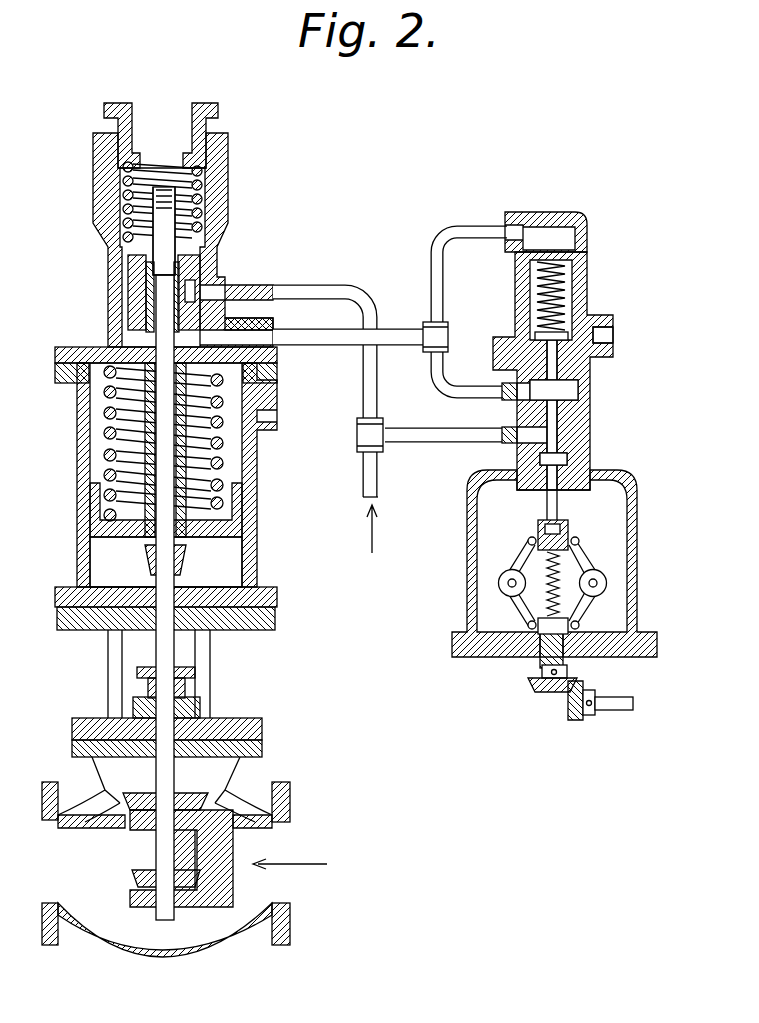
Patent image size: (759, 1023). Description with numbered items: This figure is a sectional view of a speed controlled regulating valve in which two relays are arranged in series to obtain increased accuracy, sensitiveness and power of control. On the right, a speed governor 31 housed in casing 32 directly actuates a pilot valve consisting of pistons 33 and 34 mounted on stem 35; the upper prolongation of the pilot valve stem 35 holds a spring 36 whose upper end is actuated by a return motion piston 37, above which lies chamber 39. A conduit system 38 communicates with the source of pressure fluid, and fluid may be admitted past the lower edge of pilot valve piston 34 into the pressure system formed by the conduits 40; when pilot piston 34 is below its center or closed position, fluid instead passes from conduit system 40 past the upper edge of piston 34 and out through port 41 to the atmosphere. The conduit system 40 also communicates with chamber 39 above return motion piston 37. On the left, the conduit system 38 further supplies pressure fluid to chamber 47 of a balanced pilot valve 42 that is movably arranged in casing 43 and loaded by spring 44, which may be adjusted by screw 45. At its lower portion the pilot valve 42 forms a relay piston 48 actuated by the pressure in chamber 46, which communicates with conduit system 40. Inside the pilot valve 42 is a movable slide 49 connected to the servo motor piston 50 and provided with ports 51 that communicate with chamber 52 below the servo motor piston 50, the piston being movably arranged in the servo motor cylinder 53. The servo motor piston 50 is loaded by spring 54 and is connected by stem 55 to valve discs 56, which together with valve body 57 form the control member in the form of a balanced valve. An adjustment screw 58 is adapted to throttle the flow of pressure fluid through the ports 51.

The speed governor 31 is at (607, 581).
The casing 32 is at (632, 522).
The pilot valve piston 33 is at (560, 460).
The pilot valve piston 34 is at (560, 388).
The pilot valve stem 35 is at (550, 430).
The spring 36 is at (560, 283).
The return motion piston 37 is at (570, 262).
The conduit system 38 is at (368, 475).
The chamber 39 is at (538, 236).
The conduit system 40 is at (388, 334).
The port 41 is at (600, 332).
The balanced pilot valve 42 is at (182, 276).
The casing 43 is at (226, 218).
The spring 44 is at (202, 190).
The screw 45 is at (218, 112).
The chamber 46 is at (135, 336).
The chamber 47 is at (140, 302).
The relay piston 48 is at (226, 318).
The movable slide 49 is at (150, 419).
The servo motor piston 50 is at (92, 520).
The ports 51 is at (148, 283).
The chamber 52 is at (166, 562).
The servo motor cylinder 53 is at (95, 490).
The spring 54 is at (110, 455).
The stem 55 is at (165, 651).
The valve discs 56 is at (148, 796).
The valve body 57 is at (292, 800).
The adjustment screw 58 is at (158, 232).